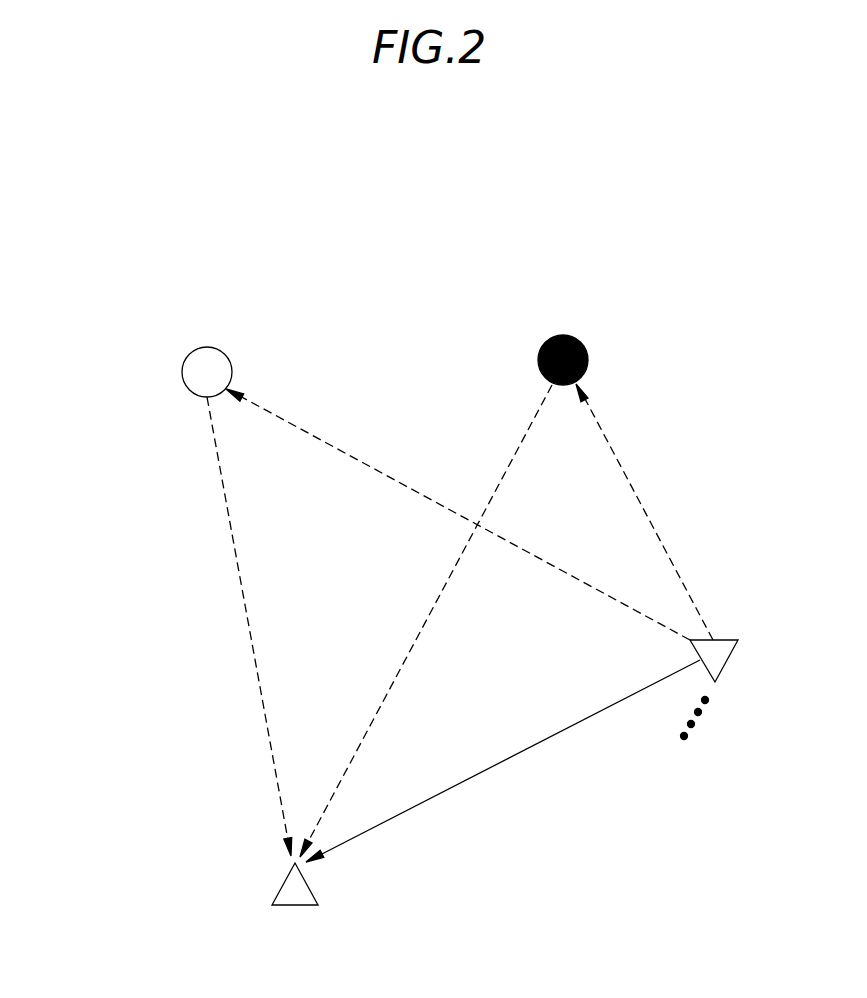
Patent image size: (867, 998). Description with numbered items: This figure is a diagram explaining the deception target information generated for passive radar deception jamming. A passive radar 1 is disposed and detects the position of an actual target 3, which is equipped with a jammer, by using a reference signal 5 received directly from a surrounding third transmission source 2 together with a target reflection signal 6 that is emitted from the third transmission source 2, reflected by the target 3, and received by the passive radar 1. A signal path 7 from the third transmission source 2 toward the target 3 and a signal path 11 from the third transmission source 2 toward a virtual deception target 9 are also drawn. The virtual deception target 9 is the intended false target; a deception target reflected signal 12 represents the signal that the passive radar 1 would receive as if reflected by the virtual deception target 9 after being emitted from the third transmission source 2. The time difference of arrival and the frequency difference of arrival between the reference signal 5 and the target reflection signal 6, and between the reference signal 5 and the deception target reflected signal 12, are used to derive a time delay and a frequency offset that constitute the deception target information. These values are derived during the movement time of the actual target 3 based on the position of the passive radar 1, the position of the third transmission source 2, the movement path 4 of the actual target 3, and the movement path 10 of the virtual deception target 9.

The passive radar 1 is at (292, 906).
The third transmission source 2 is at (722, 640).
The target 3 is at (207, 347).
The movement path 4 is at (80, 355).
The reference signal 5 is at (527, 750).
The target reflection signal 6 is at (250, 640).
The path from transmitter to first reflector 7 is at (336, 449).
The virtual deception target 9 is at (565, 335).
The deception target movement path 10 is at (477, 243).
The path from transmitter to second reflector 11 is at (625, 484).
The deception target reflected signal 12 is at (446, 583).